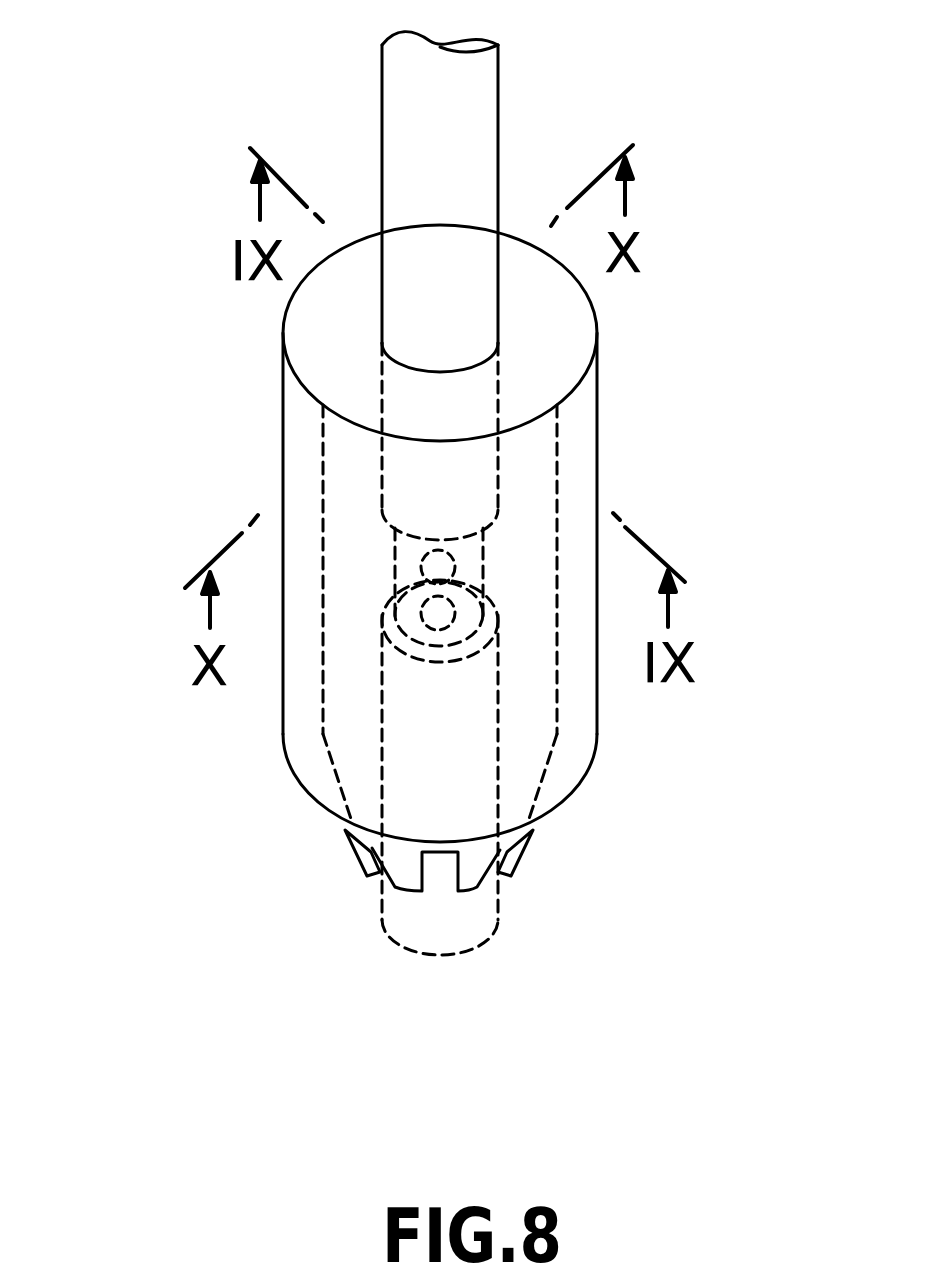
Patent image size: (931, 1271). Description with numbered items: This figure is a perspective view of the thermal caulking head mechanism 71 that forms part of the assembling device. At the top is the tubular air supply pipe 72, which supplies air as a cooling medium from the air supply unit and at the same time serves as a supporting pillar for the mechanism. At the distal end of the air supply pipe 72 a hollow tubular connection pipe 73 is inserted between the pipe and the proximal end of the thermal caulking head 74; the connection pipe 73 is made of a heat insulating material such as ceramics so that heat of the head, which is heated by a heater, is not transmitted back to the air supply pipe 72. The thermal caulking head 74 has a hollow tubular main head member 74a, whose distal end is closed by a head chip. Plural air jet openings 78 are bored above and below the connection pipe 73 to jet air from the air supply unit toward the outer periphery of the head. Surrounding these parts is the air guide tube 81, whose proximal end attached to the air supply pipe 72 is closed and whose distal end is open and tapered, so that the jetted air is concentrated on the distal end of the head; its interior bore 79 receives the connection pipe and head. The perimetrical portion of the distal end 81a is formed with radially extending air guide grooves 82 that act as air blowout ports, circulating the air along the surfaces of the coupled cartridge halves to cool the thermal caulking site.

The coupling assembly 71 is at (640, 352).
The air supply pipe 72 is at (485, 130).
The connection pipe 73 is at (438, 553).
The thermal caulking head 74 is at (403, 912).
The main head member 74a is at (462, 713).
The air jet openings 78 is at (438, 553).
The bore 79 is at (307, 433).
The air guide tube 81 is at (301, 340).
The distal end of the air guide tube 81a is at (542, 838).
The air guide grooves 82 is at (368, 850).